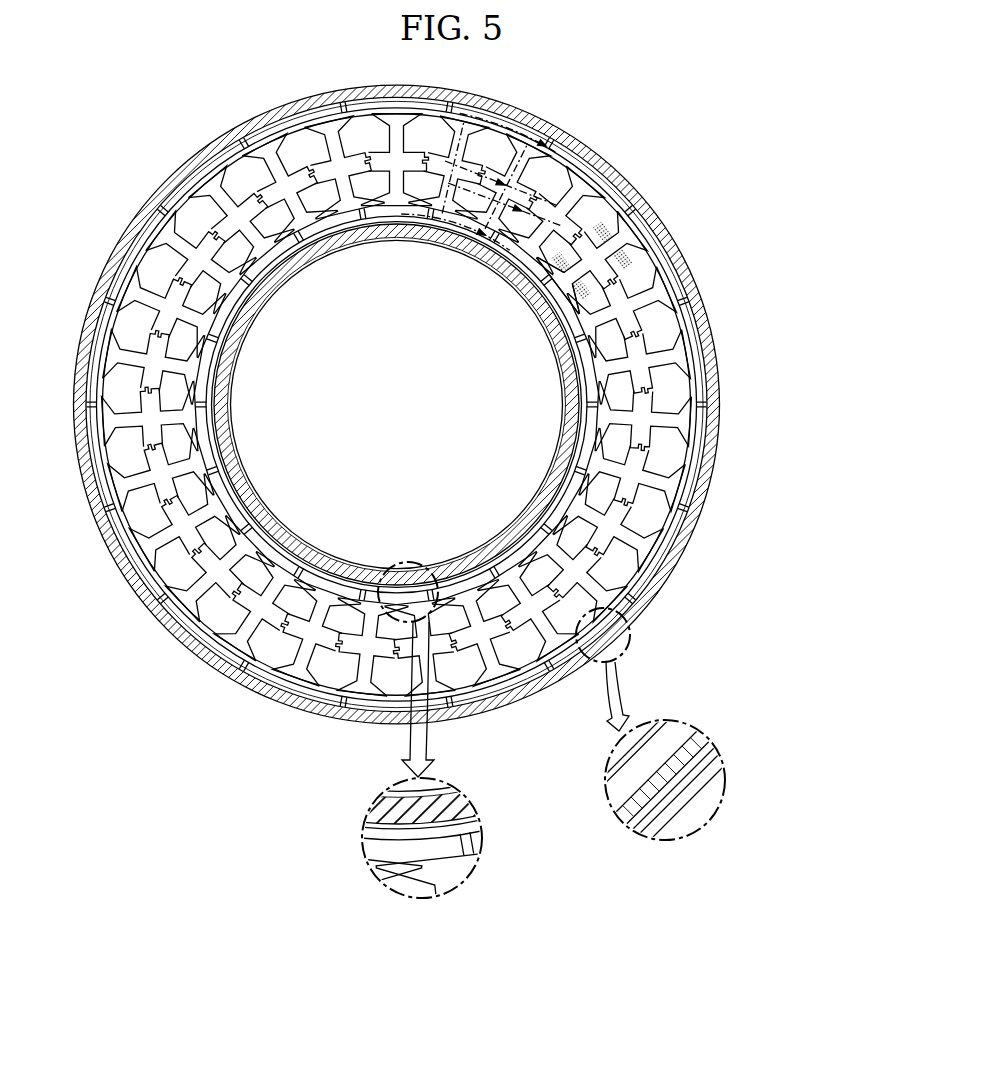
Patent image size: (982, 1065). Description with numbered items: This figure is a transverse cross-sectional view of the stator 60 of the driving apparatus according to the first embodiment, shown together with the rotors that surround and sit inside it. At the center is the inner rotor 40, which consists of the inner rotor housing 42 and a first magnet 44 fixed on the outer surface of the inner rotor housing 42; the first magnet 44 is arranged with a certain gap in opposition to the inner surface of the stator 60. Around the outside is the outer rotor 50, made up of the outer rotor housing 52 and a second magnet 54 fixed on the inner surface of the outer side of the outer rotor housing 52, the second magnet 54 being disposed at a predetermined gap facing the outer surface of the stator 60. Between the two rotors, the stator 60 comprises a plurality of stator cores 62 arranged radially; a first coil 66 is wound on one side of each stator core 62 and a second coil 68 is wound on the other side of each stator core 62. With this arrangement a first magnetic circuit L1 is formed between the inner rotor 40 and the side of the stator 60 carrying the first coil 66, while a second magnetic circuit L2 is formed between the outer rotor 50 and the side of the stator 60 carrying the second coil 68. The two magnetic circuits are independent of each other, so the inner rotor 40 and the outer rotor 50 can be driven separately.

The inner rotor 40 is at (300, 810).
The inner rotor housing 42 is at (372, 815).
The first magnet 44 is at (372, 853).
The outer rotor 50 is at (785, 718).
The outer rotor housing 52 is at (706, 752).
The second magnet 54 is at (693, 721).
The stator 60 is at (625, 267).
The stator core 62 is at (560, 284).
The first coil 66 is at (563, 273).
The second coil 68 is at (617, 226).
The first magnetic circuit L1 is at (543, 237).
The second magnetic circuit L2 is at (582, 146).